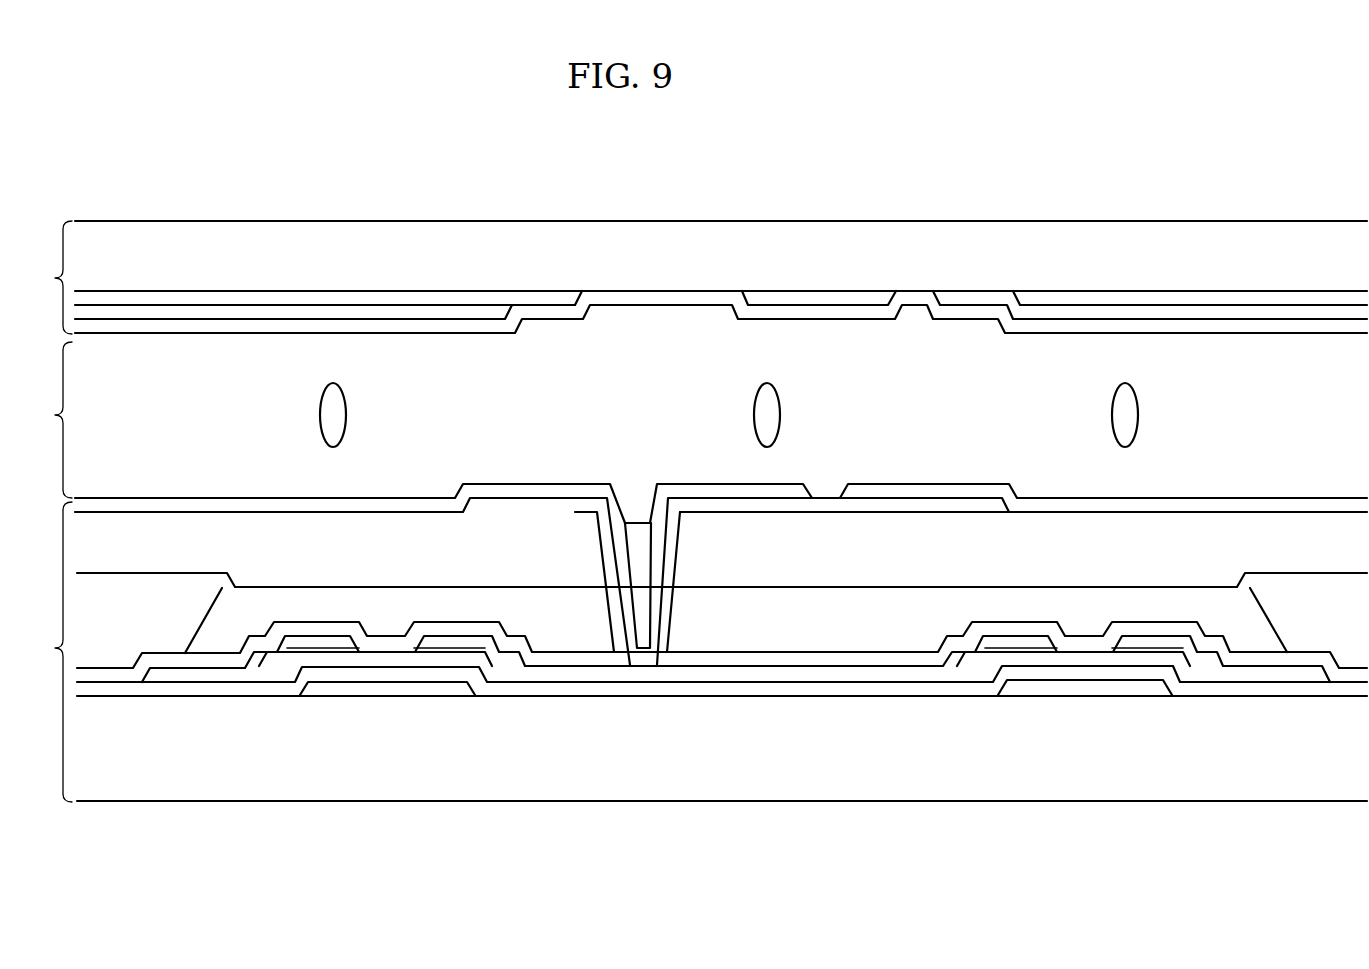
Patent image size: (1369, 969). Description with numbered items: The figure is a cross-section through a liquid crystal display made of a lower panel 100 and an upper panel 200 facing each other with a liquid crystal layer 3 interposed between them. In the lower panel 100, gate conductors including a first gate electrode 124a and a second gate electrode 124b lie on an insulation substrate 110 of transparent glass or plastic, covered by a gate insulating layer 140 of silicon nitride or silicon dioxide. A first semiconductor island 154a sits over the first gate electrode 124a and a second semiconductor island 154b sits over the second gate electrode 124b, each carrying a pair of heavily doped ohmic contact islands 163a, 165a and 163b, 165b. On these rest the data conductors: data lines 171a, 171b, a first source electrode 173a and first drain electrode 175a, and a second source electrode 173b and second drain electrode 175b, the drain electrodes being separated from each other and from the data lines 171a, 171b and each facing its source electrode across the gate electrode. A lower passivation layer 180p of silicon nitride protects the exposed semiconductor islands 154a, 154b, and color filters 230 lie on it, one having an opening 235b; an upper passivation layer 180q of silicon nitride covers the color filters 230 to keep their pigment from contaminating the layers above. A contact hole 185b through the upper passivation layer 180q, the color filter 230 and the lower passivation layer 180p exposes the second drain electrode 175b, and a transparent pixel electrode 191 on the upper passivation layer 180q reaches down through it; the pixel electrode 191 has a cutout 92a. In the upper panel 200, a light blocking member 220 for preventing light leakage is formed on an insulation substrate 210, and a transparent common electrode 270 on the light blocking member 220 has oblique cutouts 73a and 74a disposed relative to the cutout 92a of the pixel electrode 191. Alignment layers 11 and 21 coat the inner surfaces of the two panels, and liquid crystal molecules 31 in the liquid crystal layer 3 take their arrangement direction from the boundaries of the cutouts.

The upper panel 200 is at (45, 277).
The liquid crystal layer 3 is at (53, 420).
The lower panel 100 is at (45, 652).
The insulation substrate 210 is at (718, 246).
The light blocking member 220 is at (267, 304).
The second upper oblique cutout 73a is at (522, 321).
The common electrode 270 is at (481, 311).
The third upper oblique cutout 74a is at (890, 306).
The alignment layer 21 is at (1068, 324).
The liquid crystal molecule 31 is at (1142, 405).
The alignment layer 11 is at (1192, 497).
The pixel electrode 191 is at (707, 507).
The cutout 92a is at (812, 495).
The opening 235b is at (603, 603).
The contact hole 185b is at (604, 522).
The upper passivation layer 180q is at (415, 540).
The lower passivation layer 180p is at (790, 668).
The color filter 230 is at (120, 636).
The second semiconductor island 154b is at (503, 673).
The first semiconductor island 154a is at (1190, 673).
The ohmic contact island 163b is at (268, 669).
The ohmic contact island 165b is at (432, 656).
The ohmic contact island 165a is at (972, 661).
The ohmic contact island 163a is at (1202, 668).
The second source electrode 173b is at (335, 641).
The second drain electrode 175b is at (627, 671).
The first source electrode 173a is at (1133, 643).
The first drain electrode 175a is at (1028, 643).
The gate insulating layer 140 is at (920, 690).
The second gate electrode 124b is at (387, 691).
The first gate electrode 124a is at (1085, 686).
The insulation substrate 110 is at (832, 766).
The data line 171b is at (165, 676).
The data line 171a is at (1280, 676).